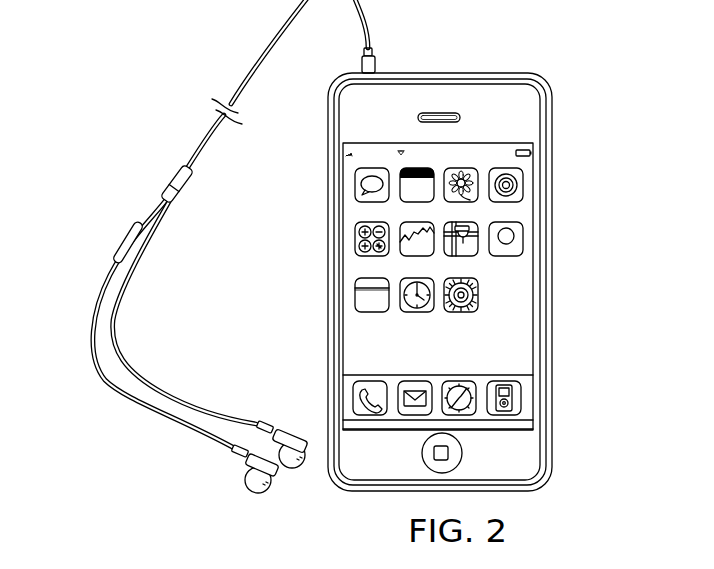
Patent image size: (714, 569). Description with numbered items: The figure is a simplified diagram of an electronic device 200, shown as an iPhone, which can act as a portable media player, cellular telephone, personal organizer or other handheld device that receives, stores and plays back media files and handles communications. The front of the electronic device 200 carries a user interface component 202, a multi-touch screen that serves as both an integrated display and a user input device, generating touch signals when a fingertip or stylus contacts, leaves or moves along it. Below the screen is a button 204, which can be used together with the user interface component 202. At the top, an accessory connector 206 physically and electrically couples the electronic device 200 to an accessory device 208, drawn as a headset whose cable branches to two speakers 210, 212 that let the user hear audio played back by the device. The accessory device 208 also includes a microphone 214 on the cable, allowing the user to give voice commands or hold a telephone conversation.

The electronic device 200 is at (516, 108).
The user interface component 202 is at (518, 338).
The button 204 is at (453, 452).
The accessory connector 206 is at (369, 65).
The accessory device 208 is at (132, 359).
The speaker 210 is at (250, 473).
The speaker 212 is at (298, 438).
The microphone 214 is at (133, 232).